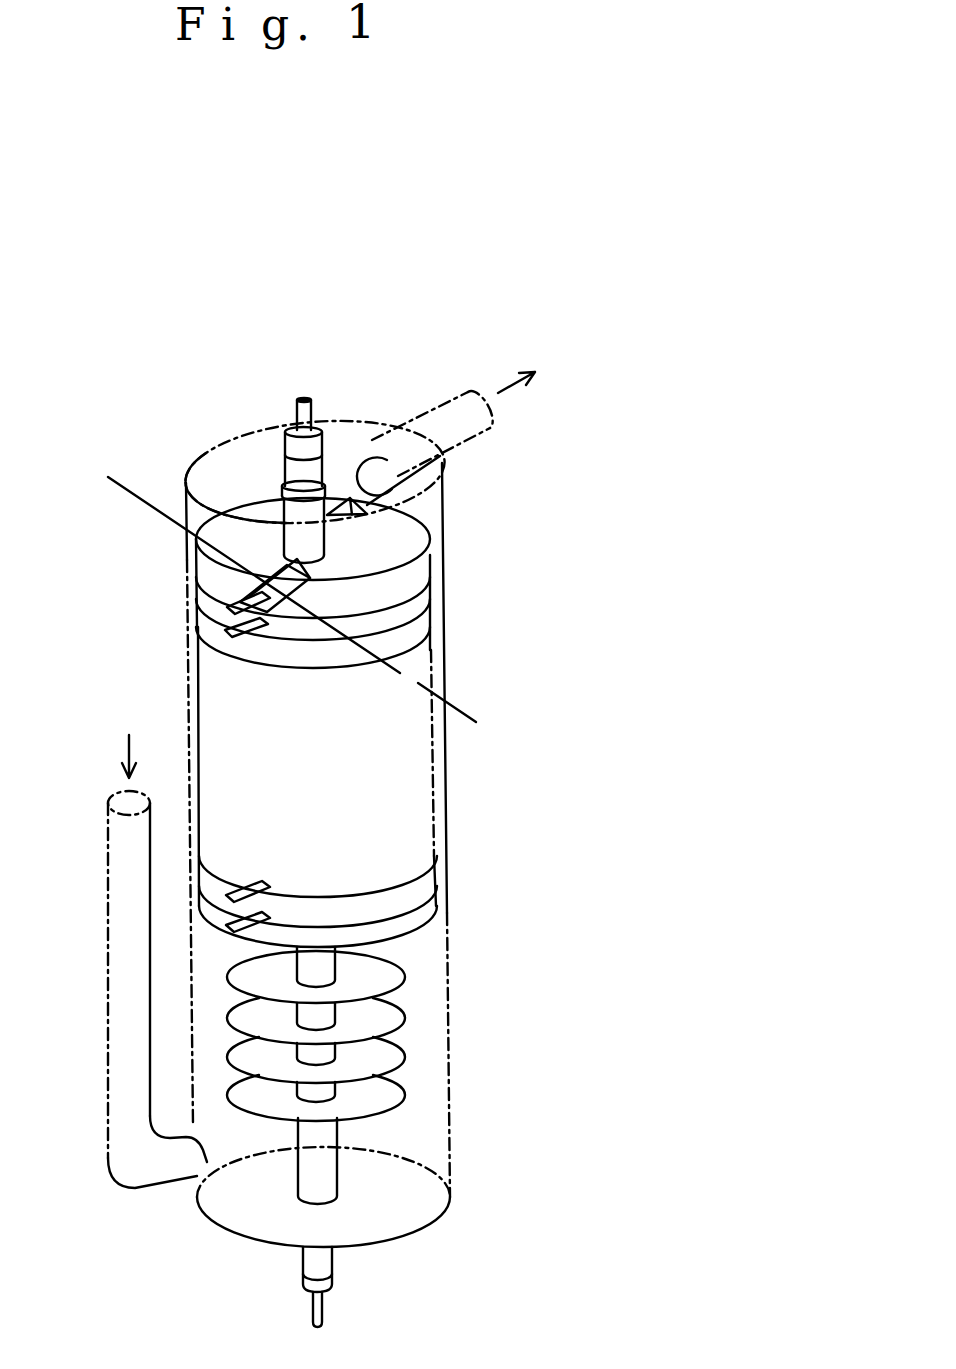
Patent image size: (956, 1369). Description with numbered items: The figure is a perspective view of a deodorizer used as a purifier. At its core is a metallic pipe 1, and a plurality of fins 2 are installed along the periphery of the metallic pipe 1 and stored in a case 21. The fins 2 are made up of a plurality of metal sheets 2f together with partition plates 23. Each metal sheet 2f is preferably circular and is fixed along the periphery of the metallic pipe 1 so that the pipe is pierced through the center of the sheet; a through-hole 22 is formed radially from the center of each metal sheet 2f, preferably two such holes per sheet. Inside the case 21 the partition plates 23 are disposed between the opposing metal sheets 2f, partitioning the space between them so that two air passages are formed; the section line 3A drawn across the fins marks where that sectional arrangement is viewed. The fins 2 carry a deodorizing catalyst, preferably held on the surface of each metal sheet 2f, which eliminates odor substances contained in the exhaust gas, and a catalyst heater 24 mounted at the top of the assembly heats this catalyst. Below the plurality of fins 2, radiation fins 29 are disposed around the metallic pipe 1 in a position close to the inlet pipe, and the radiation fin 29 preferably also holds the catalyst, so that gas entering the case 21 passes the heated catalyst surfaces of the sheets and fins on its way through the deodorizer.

The metallic pipe 1 is at (322, 1168).
The fins 2 is at (447, 692).
The metal sheet 2f is at (400, 550).
The case 21 is at (447, 985).
The through-hole 22 is at (362, 497).
The partition plate 23 is at (300, 590).
The catalyst heater 24 is at (290, 470).
The radiation fin 29 is at (390, 1053).
The section line 3A- 3A is at (117, 501).